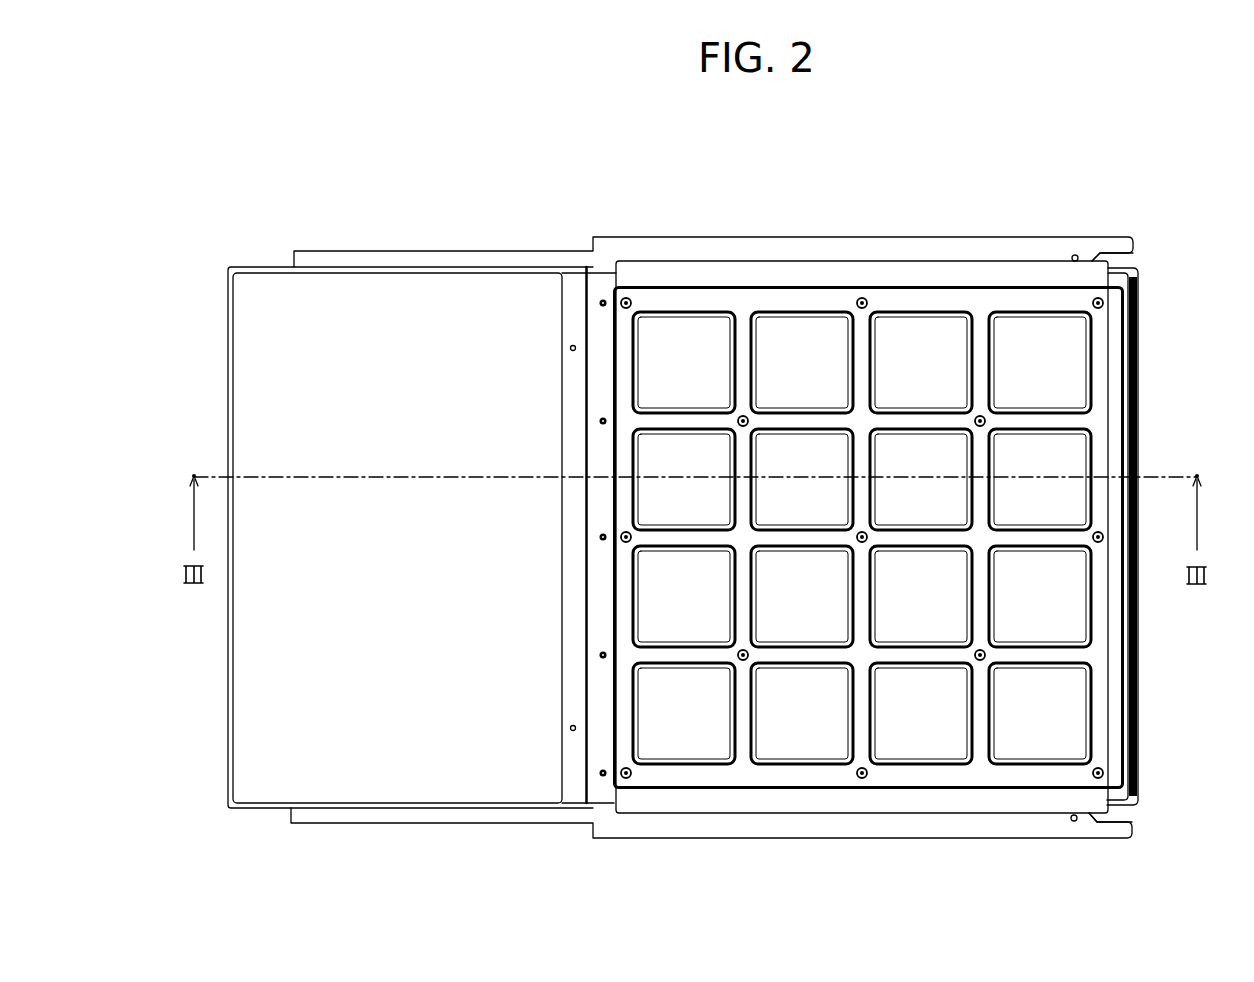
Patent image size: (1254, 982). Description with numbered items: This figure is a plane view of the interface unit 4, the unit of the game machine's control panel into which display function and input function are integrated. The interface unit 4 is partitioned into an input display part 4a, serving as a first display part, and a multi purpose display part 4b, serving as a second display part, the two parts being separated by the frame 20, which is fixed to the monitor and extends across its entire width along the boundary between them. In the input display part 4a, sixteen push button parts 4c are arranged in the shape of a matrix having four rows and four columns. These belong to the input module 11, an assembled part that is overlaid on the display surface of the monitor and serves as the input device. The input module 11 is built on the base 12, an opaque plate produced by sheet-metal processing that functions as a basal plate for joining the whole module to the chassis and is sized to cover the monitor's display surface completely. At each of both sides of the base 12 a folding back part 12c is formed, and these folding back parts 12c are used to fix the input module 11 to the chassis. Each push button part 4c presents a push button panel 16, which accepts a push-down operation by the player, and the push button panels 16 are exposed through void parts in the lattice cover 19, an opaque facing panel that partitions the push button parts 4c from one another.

The interface unit 4 is at (675, 475).
The input display part 4a is at (671, 253).
The multi purpose display part 4b is at (391, 290).
The push button part 4c is at (918, 335).
The input module 11 is at (1148, 353).
The base 12 is at (598, 812).
The folding back part 12c is at (960, 237).
The push button panel 16 is at (790, 335).
The lattice cover 19 is at (818, 302).
The frame 20 is at (575, 294).